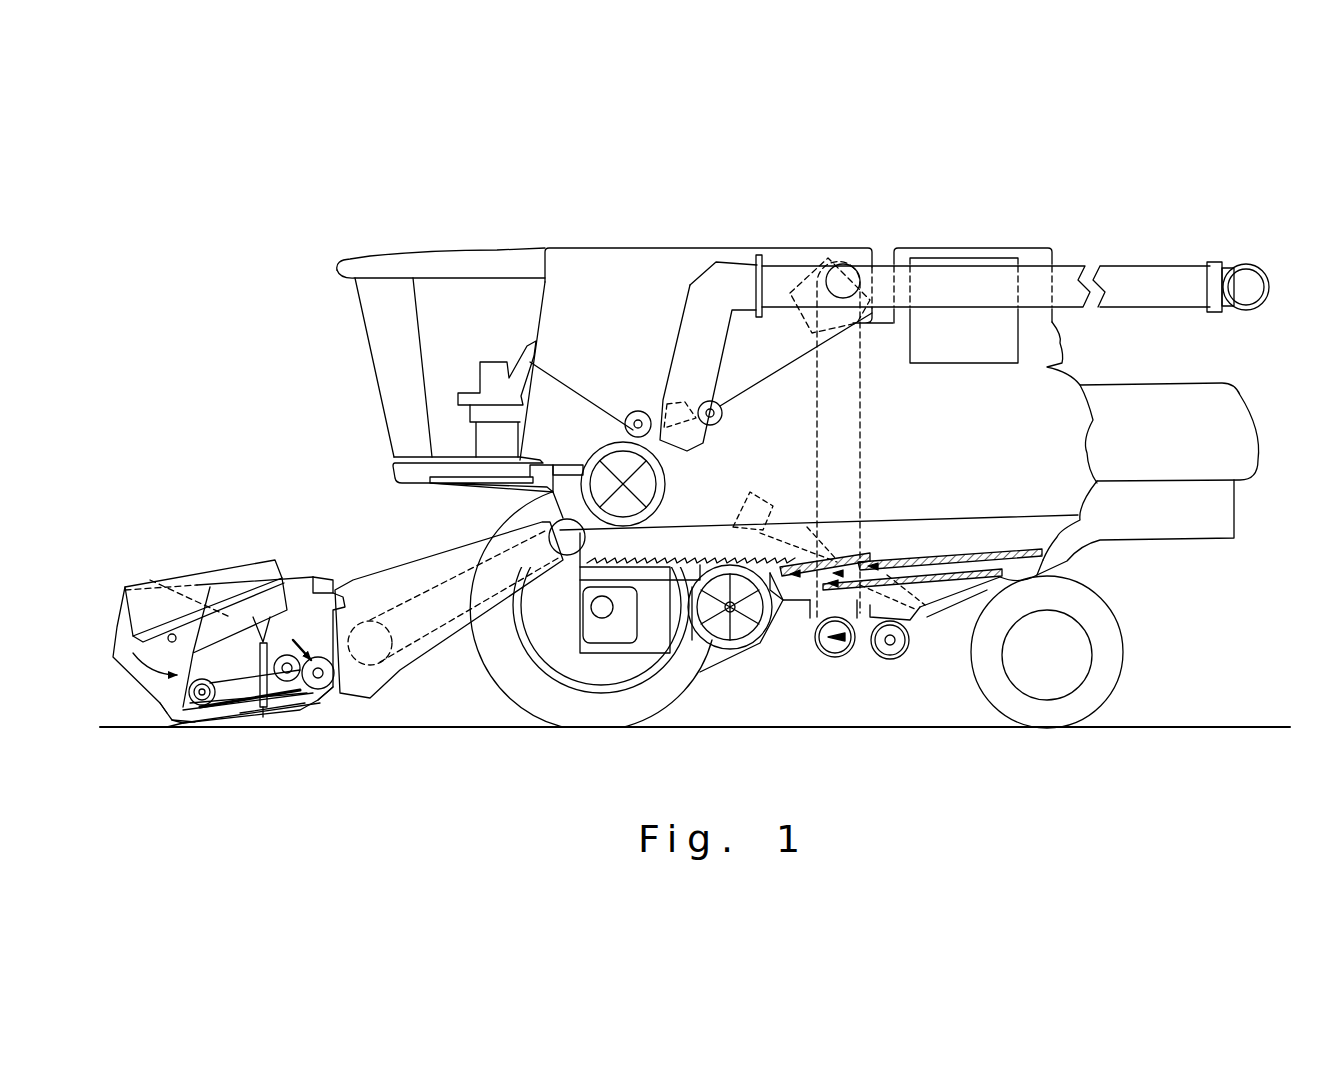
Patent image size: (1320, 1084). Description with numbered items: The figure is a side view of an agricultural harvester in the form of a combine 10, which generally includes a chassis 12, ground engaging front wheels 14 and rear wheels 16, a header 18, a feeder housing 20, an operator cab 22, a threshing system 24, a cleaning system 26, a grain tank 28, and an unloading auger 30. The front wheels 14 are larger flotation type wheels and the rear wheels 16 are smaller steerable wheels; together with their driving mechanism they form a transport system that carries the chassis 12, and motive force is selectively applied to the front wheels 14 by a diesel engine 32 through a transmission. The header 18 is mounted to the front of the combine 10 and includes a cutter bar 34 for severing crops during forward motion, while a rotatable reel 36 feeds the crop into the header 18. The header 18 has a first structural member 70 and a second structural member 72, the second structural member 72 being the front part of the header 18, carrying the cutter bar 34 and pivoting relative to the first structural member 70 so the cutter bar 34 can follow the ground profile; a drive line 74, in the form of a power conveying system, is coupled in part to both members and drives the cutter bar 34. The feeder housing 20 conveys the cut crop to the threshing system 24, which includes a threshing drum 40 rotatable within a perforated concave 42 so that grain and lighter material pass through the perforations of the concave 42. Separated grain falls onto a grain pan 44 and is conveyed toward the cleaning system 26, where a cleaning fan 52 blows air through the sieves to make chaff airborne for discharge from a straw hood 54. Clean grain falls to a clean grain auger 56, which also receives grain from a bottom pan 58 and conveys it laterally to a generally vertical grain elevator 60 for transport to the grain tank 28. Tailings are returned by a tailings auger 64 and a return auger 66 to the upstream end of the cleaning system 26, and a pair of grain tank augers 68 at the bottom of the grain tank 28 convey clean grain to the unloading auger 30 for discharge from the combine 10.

The combine 10 is at (430, 240).
The chassis 12 is at (1080, 573).
The front wheels 14 is at (512, 686).
The rear wheels 16 is at (1118, 670).
The header 18 is at (206, 558).
The feeder housing 20 is at (407, 562).
The operator cab 22 is at (372, 347).
The threshing system 24 is at (512, 502).
The cleaning system 26 is at (788, 660).
The grain tank 28 is at (600, 254).
The unloading auger 30 is at (1157, 250).
The diesel engine 32 is at (952, 262).
The cutter bar 34 is at (180, 728).
The reel 36 is at (122, 624).
The threshing drum 40 is at (607, 460).
The concave 42 is at (666, 488).
The grain pan 44 is at (580, 566).
The cleaning fan 52 is at (727, 645).
The straw hood 54 is at (1243, 425).
The clean grain auger 56 is at (838, 652).
The bottom pan 58 is at (985, 593).
The grain elevator 60 is at (868, 370).
The tailings auger 64 is at (890, 662).
The return auger 66 is at (807, 533).
The grain tank augers 68 is at (638, 411).
The first structural member 70 is at (338, 703).
The second structural member 72 is at (152, 713).
The drive line 74 is at (268, 736).